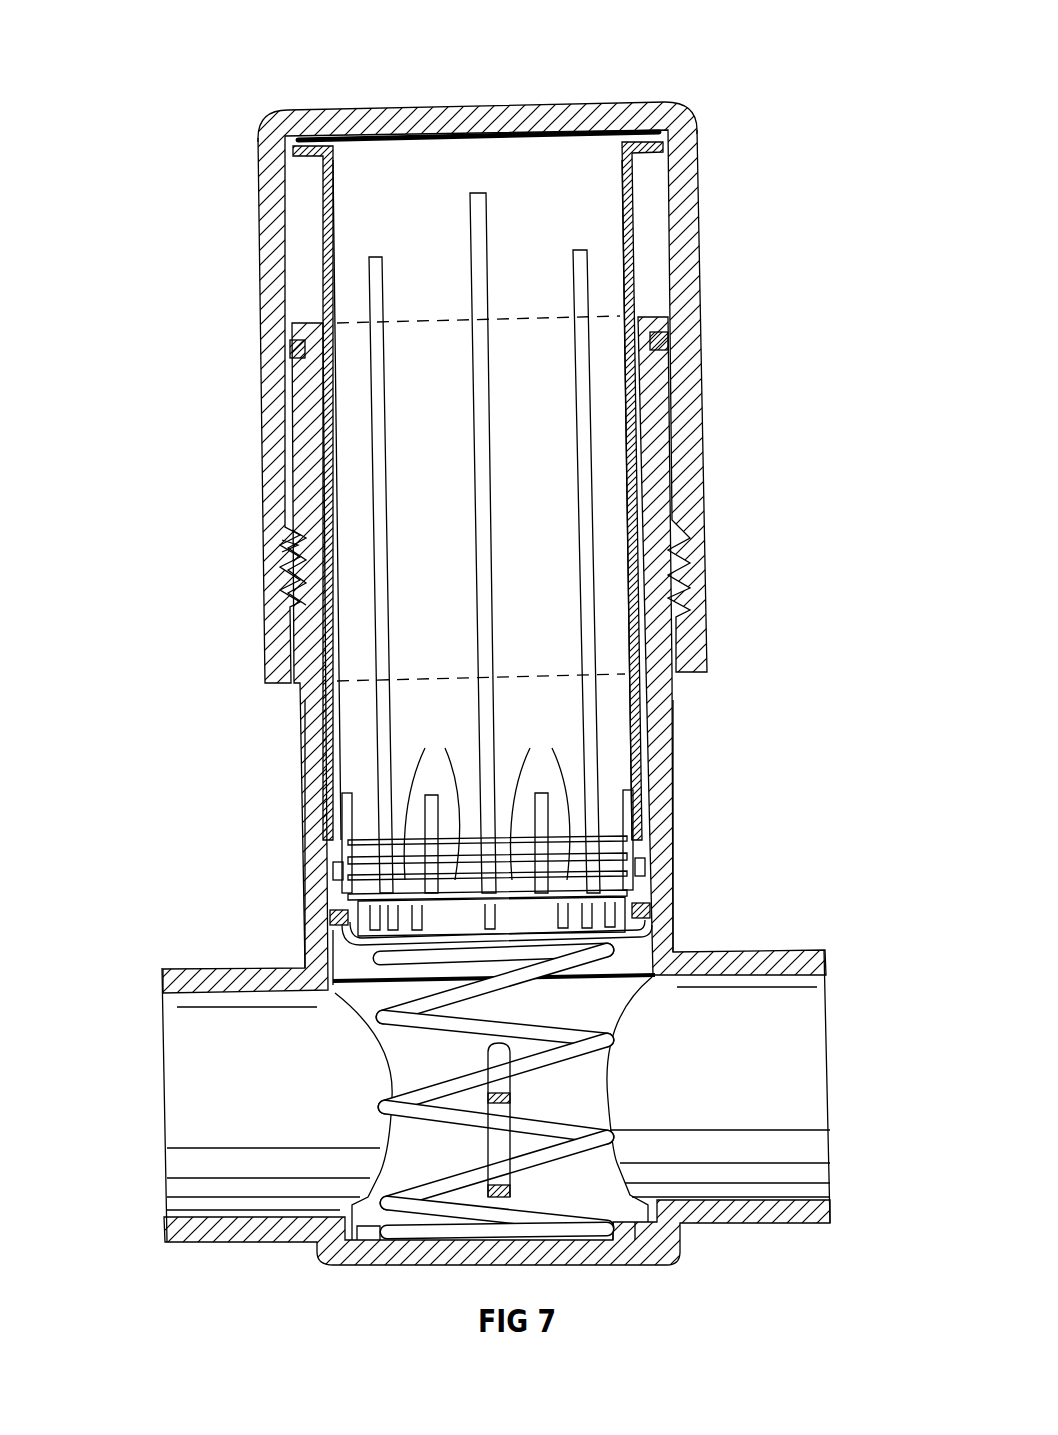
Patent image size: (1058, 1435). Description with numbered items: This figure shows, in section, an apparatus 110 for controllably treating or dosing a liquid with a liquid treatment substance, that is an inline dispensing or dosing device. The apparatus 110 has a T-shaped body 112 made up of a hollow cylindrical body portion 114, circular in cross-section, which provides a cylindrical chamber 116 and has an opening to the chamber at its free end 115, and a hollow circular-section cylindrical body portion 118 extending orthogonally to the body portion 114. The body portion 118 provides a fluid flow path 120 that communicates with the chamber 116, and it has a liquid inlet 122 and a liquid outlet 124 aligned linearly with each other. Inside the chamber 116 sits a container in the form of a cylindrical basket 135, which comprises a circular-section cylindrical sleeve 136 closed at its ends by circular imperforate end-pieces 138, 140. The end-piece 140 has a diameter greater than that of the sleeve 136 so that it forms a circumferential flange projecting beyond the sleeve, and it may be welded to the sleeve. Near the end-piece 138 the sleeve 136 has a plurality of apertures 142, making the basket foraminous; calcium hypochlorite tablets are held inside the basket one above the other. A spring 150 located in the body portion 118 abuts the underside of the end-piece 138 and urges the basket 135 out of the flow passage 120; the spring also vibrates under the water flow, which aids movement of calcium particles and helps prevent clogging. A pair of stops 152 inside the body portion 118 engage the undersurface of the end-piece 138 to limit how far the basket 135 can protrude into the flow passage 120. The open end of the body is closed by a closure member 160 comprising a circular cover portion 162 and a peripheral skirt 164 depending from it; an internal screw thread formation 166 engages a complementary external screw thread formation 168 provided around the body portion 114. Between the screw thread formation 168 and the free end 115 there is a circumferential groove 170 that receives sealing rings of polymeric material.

The apparatus 110 is at (738, 78).
The T-shaped body 112 is at (735, 882).
The hollow cylindrical body portion 114 is at (658, 831).
The free end 115 is at (660, 392).
The cylindrical chamber 116 is at (363, 968).
The hollow circular-section cylindrical body portion 118 is at (497, 1251).
The fluid flow path 120 is at (245, 1108).
The liquid inlet 122 is at (150, 1043).
The liquid outlet 124 is at (840, 1066).
The basket 135 is at (602, 759).
The sleeve 136 is at (640, 708).
The end-piece 138 is at (655, 934).
The end-piece 140 is at (590, 130).
The apertures 142 is at (489, 546).
The spring 150 is at (540, 1062).
The stops 152 is at (500, 1138).
The closure member 160 is at (728, 223).
The circular cover portion 162 is at (445, 112).
The peripheral skirt 164 is at (278, 427).
The internal screw thread formation 166 is at (297, 592).
The external screw thread formation 168 is at (290, 578).
The circumferential groove 170 is at (292, 356).